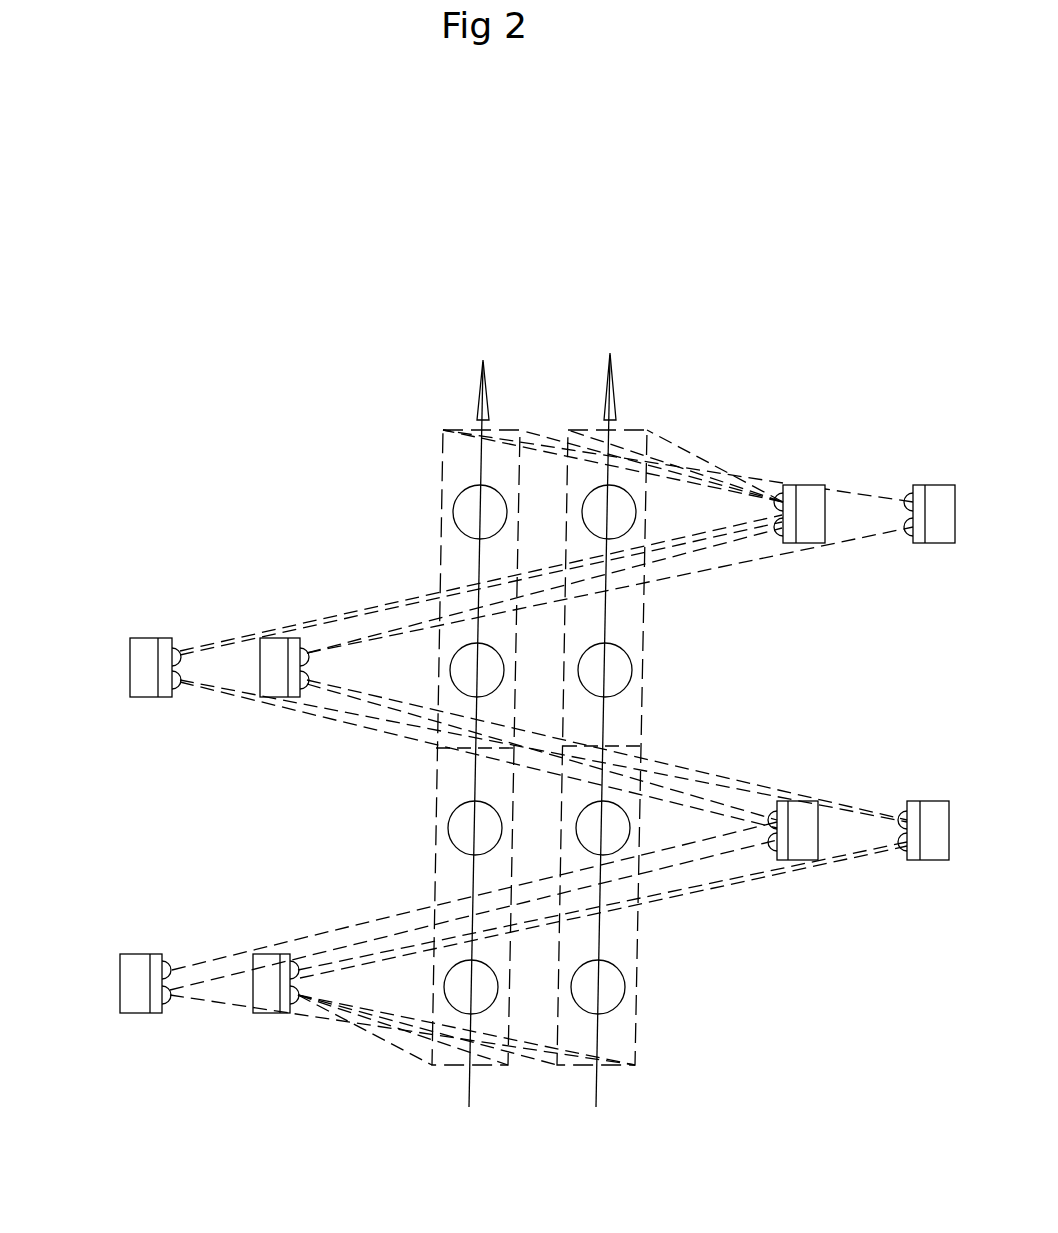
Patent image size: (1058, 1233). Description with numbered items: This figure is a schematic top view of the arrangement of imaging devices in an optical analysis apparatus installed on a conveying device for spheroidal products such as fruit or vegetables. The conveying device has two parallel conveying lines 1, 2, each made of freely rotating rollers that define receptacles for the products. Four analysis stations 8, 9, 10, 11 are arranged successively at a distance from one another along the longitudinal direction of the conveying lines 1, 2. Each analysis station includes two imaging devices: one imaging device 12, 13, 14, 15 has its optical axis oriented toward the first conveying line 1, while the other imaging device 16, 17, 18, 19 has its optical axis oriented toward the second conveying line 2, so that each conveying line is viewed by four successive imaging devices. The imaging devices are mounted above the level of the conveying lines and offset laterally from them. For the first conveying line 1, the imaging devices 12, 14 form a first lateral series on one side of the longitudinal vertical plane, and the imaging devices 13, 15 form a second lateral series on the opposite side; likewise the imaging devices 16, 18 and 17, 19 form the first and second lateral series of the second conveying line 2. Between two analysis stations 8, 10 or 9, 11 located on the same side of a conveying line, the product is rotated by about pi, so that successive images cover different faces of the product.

The first conveying line 1 is at (453, 1067).
The second conveying line 2 is at (583, 1067).
The analysis station 8 is at (172, 976).
The analysis station 9 is at (851, 843).
The analysis station 10 is at (180, 637).
The analysis station 11 is at (860, 505).
The imaging device 12 is at (133, 970).
The imaging device 13 is at (803, 818).
The imaging device 14 is at (138, 683).
The imaging device 15 is at (806, 500).
The imaging device 16 is at (200, 1020).
The imaging device 17 is at (929, 813).
The imaging device 18 is at (273, 653).
The imaging device 19 is at (910, 552).